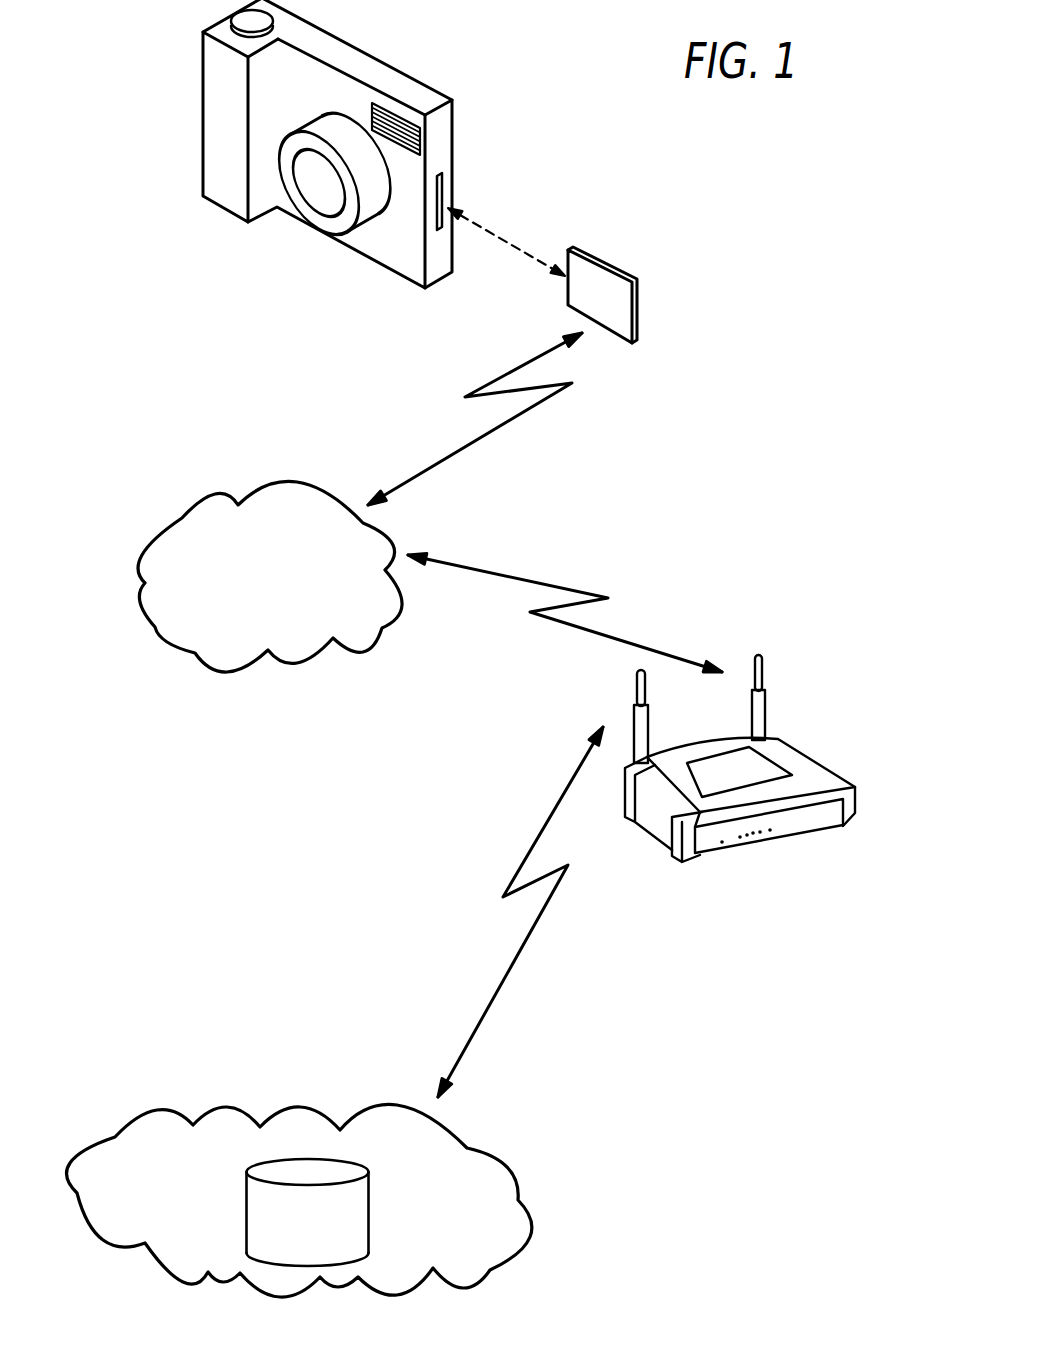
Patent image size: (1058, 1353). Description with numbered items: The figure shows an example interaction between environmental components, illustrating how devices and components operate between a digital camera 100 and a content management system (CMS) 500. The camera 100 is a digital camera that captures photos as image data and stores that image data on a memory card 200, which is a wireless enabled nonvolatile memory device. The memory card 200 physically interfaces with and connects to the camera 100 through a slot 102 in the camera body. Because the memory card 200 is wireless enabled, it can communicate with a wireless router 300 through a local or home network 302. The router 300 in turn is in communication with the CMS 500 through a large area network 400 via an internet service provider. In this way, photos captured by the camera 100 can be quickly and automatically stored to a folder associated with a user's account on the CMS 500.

The digital camera 100 is at (348, 67).
The slot 102 is at (442, 185).
The memory card 200 is at (610, 267).
The wireless router 300 is at (823, 763).
The local or home network 302 is at (209, 493).
The large area network (LAN) 400 is at (220, 1108).
The content management system (CMS) 500 is at (260, 1213).